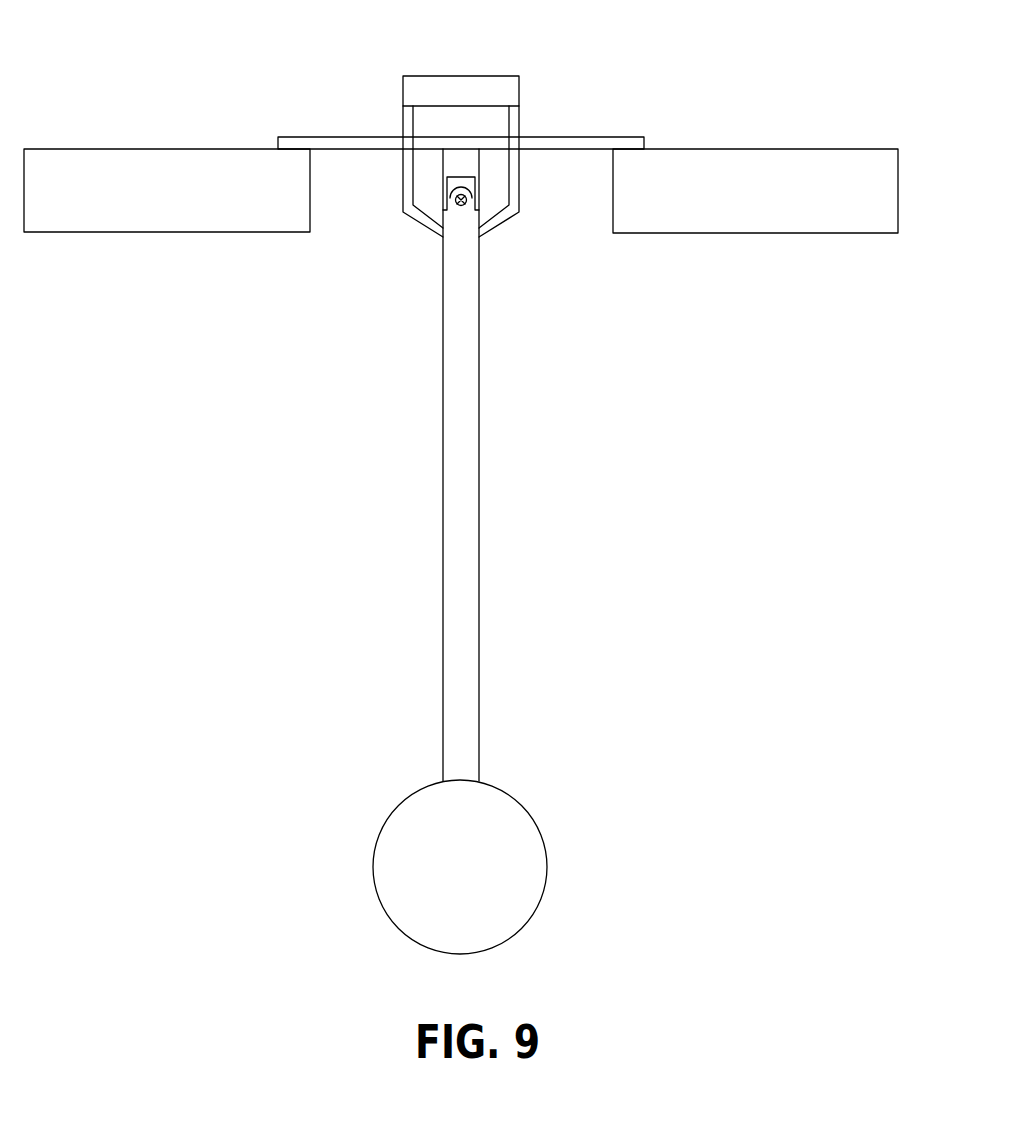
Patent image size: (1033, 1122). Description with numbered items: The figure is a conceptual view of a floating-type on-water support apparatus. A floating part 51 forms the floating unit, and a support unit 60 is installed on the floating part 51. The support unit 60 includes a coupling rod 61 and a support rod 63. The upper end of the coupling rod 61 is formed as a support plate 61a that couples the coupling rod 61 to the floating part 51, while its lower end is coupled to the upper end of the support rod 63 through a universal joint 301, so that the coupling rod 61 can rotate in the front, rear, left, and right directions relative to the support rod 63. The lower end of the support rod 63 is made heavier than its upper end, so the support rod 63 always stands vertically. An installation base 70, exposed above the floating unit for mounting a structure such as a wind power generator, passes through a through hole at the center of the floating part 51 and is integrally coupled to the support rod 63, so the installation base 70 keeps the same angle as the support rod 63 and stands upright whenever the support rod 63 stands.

The floating part 51 is at (750, 168).
The support unit 60 is at (407, 530).
The coupling rod 61 is at (443, 163).
The support plate 61a is at (598, 137).
The support rod 63 is at (457, 311).
The installation base 70 is at (492, 92).
The universal joint 301 is at (465, 205).